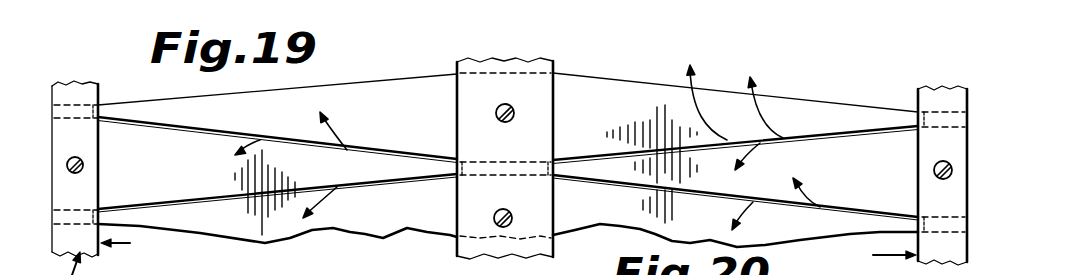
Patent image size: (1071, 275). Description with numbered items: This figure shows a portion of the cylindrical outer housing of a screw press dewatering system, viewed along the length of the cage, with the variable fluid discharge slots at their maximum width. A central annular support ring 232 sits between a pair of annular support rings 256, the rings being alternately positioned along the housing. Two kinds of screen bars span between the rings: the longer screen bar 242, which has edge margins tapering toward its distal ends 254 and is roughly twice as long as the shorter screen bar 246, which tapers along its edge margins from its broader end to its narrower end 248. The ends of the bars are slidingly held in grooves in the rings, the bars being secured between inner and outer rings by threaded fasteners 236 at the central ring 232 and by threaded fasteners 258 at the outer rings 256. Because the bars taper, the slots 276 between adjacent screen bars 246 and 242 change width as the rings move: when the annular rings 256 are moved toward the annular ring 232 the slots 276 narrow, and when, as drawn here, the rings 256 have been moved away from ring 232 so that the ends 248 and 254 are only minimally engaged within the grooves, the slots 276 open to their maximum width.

The annular support ring 232 is at (540, 57).
The threaded fastener 236 is at (512, 104).
The screen bar 242 is at (416, 83).
The screen bar 246 is at (163, 181).
The narrower end 248 is at (388, 205).
The distal end 254 is at (118, 104).
The annular support ring 256 is at (519, 180).
The threaded fastener 258 is at (78, 172).
The slot 276 is at (203, 203).